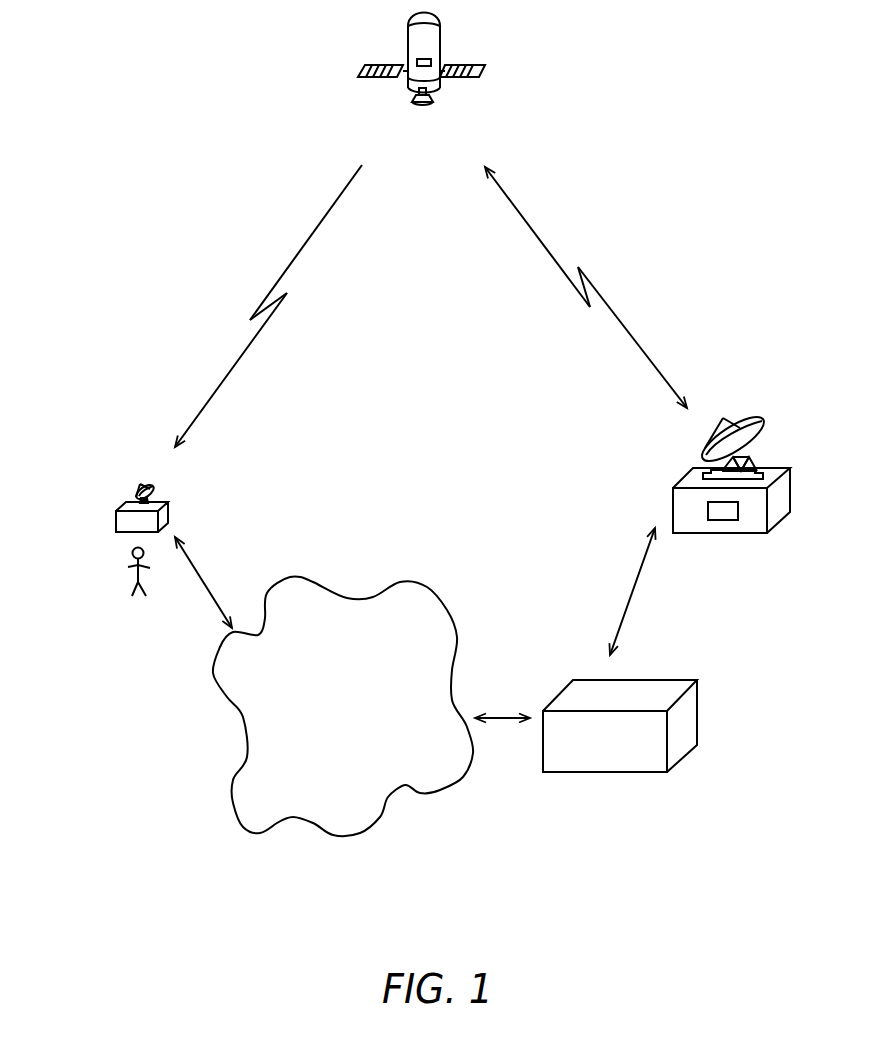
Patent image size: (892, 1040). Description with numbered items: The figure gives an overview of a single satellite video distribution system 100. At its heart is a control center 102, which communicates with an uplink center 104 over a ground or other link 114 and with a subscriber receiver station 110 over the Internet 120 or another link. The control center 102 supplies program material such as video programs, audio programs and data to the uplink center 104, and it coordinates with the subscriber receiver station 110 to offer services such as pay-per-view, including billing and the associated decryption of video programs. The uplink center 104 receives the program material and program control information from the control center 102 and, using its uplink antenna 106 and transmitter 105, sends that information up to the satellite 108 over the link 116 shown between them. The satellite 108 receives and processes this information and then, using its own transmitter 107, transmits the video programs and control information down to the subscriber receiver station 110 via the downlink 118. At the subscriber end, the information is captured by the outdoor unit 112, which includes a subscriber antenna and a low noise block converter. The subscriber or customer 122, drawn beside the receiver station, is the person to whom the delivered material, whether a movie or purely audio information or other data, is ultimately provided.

The video distribution system 100 is at (652, 150).
The control center 102 is at (682, 758).
The uplink center 104 is at (737, 477).
The transmitter 105 is at (738, 521).
The uplink antenna 106 is at (762, 425).
The transmitter 107 is at (428, 58).
The satellite 108 is at (460, 78).
The subscriber receiver station 110 is at (188, 475).
The outdoor unit 112 is at (142, 488).
The ground or other link 114 is at (625, 600).
The satellite-gateway link 116 is at (620, 322).
The downlink 118 is at (306, 240).
The Internet 120 is at (440, 790).
The subscriber/customer 122 is at (126, 577).